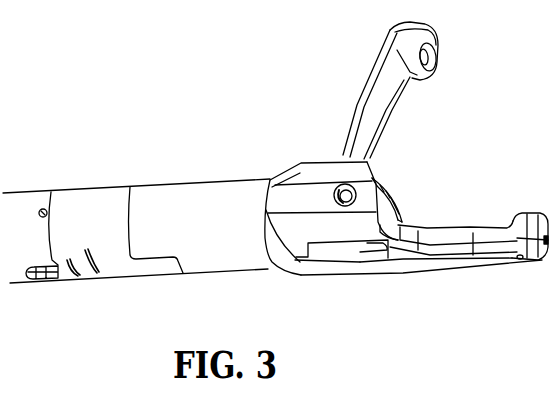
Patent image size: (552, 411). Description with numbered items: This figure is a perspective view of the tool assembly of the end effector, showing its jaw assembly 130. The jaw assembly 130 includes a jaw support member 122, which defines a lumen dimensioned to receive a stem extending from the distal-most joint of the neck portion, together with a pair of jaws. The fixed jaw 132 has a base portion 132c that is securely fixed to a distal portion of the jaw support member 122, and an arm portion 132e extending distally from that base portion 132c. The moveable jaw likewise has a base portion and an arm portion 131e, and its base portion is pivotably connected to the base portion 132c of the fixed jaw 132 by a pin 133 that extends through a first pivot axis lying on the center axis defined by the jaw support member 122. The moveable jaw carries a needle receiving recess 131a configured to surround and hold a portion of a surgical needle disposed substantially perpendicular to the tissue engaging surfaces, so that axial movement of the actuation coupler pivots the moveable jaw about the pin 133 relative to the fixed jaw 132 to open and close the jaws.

The jaw support member 122 is at (198, 187).
The jaw assembly 130 is at (402, 198).
The needle receiving recess 131a is at (428, 60).
The arm portion 131e is at (388, 124).
The fixed jaw 132 is at (413, 265).
The base portion 132c is at (293, 252).
The arm portion 132e is at (443, 265).
The pin 133 is at (342, 190).